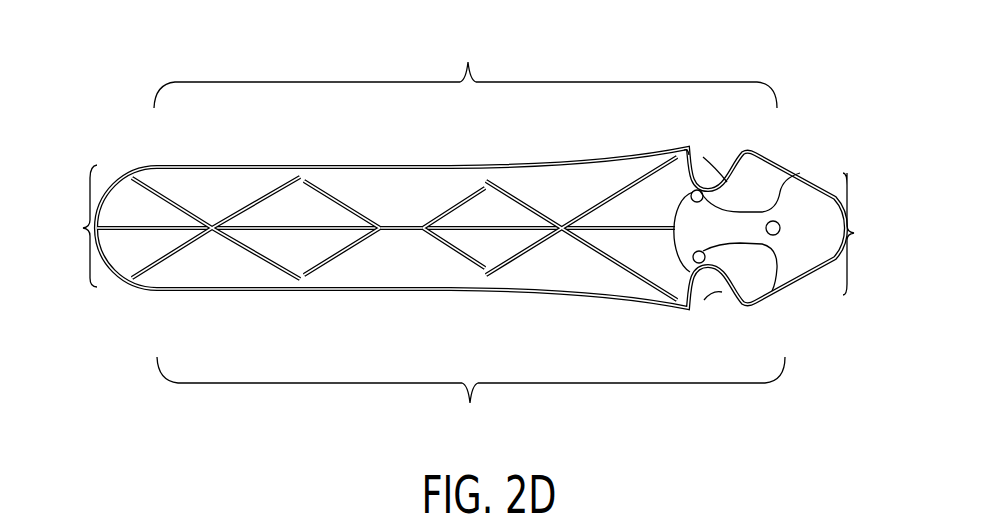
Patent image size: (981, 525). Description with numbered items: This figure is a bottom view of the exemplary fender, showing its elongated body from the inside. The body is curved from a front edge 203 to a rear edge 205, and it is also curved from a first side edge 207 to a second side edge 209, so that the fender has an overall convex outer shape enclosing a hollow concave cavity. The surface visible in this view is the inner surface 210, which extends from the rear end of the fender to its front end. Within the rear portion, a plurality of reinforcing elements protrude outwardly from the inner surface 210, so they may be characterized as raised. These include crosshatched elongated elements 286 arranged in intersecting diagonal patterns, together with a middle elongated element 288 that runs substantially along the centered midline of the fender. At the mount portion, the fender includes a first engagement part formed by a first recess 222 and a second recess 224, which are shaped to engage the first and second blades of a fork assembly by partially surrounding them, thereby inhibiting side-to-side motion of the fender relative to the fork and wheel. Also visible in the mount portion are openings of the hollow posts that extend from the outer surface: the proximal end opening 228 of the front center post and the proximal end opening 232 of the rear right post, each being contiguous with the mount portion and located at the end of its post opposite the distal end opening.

The front edge 203 is at (780, 234).
The rear edge 205 is at (71, 226).
The first side edge 207 is at (465, 64).
The second side edge 209 is at (471, 400).
The inner surface 210 is at (227, 192).
The first recess 222 is at (720, 153).
The second recess 224 is at (721, 303).
The proximal end opening 228 is at (778, 221).
The proximal end opening 232 is at (690, 147).
The crosshatched elongated elements 286 is at (160, 197).
The middle elongated element 288 is at (405, 227).